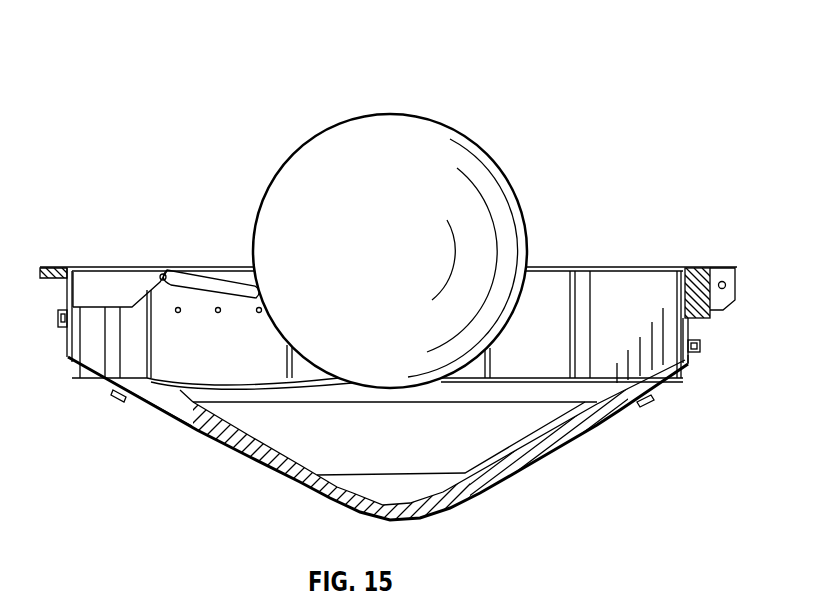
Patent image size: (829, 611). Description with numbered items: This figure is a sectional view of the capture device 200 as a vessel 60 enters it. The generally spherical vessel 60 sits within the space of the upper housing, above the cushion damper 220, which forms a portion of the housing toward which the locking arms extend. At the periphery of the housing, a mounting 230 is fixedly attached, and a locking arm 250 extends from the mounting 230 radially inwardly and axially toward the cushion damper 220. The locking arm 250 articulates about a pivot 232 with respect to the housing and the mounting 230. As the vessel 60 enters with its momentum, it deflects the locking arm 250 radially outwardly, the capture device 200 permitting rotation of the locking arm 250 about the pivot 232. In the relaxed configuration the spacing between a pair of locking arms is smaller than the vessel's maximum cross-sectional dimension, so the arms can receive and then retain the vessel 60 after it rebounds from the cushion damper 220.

The capture device 200 is at (122, 102).
The vessel 60 is at (492, 160).
The cushion damper 220 is at (503, 443).
The mounting 230 is at (110, 280).
The pivot 232 is at (162, 273).
The locking arm 250 is at (201, 279).